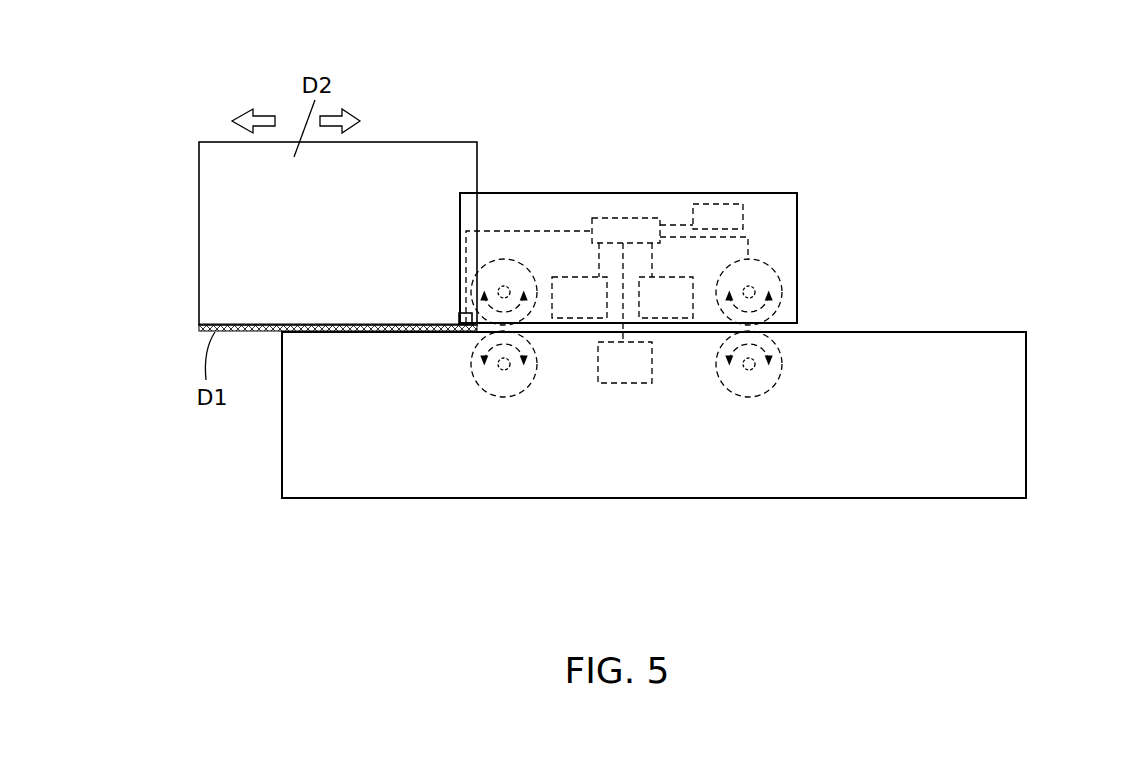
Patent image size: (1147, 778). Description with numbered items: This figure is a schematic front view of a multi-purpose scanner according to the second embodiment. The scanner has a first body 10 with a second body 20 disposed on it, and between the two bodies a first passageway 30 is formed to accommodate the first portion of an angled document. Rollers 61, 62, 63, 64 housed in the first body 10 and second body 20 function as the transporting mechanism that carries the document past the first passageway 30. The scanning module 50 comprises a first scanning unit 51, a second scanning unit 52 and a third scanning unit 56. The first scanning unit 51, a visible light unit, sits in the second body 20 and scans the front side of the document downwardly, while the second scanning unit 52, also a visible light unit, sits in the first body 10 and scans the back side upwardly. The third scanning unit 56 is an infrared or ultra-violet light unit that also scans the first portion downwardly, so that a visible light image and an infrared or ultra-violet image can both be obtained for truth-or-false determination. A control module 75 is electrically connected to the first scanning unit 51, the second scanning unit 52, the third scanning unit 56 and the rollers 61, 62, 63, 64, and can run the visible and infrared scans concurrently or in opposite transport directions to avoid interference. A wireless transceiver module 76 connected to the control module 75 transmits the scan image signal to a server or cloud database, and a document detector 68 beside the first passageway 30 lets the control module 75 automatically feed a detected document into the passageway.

The first body 10 is at (1017, 392).
The second body 20 is at (787, 250).
The first passageway 30 is at (570, 324).
The scanning module 50 is at (804, 246).
The first scanning unit 51 is at (574, 277).
The second scanning unit 52 is at (628, 383).
The third scanning unit 56 is at (663, 277).
The roller 61 is at (488, 395).
The roller 62 is at (509, 258).
The roller 63 is at (752, 397).
The roller 64 is at (749, 292).
The document detector 68 is at (459, 315).
The control module 75 is at (628, 218).
The wireless transceiver module 76 is at (720, 204).